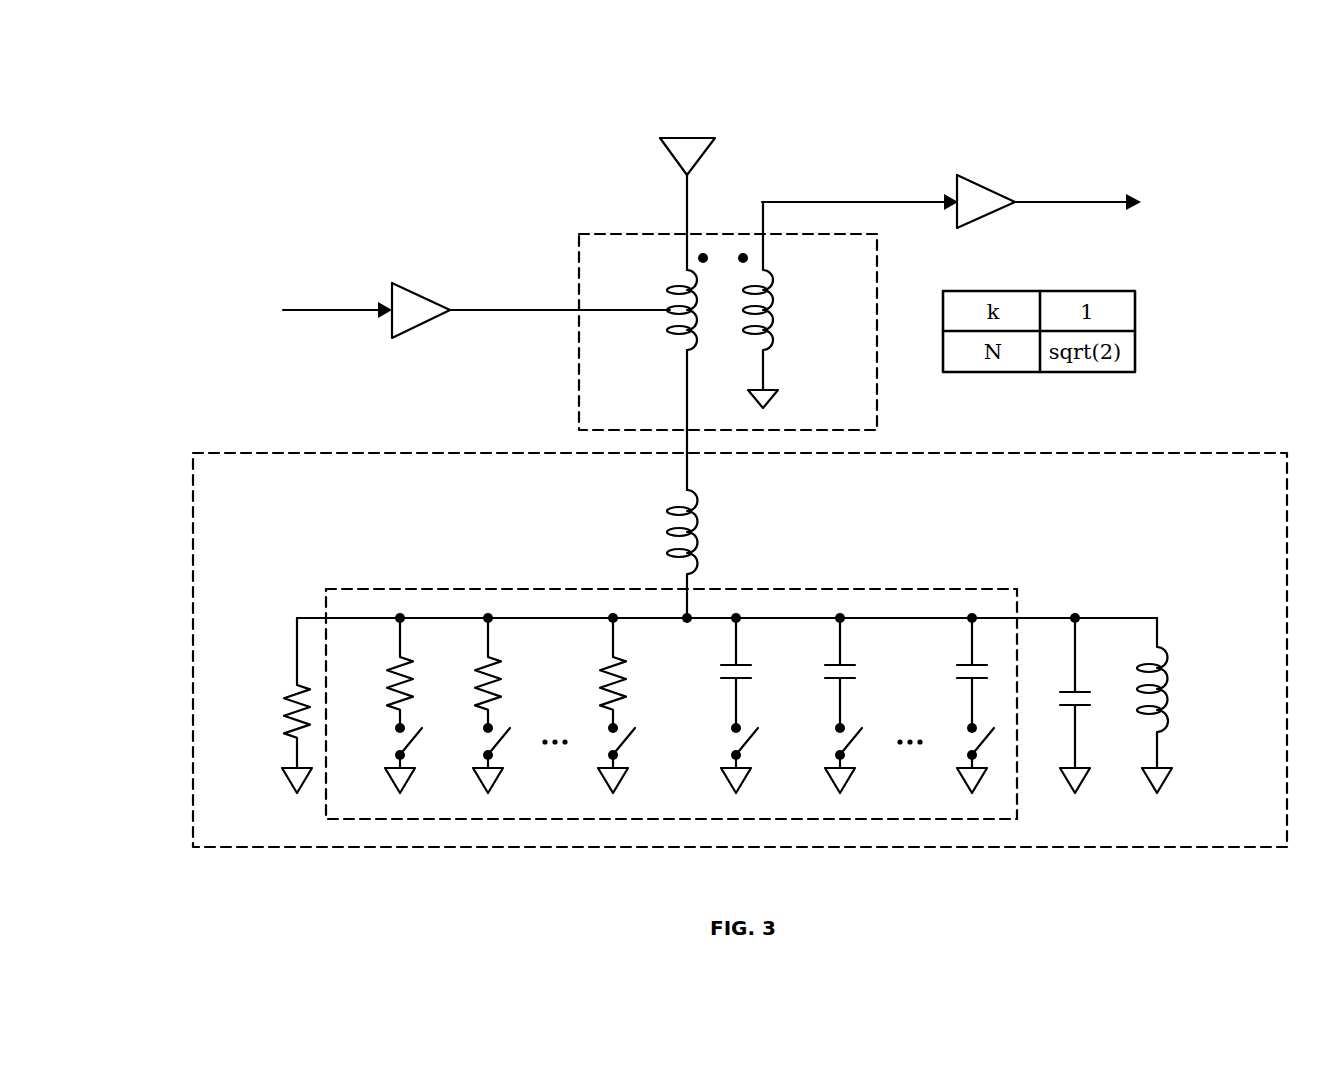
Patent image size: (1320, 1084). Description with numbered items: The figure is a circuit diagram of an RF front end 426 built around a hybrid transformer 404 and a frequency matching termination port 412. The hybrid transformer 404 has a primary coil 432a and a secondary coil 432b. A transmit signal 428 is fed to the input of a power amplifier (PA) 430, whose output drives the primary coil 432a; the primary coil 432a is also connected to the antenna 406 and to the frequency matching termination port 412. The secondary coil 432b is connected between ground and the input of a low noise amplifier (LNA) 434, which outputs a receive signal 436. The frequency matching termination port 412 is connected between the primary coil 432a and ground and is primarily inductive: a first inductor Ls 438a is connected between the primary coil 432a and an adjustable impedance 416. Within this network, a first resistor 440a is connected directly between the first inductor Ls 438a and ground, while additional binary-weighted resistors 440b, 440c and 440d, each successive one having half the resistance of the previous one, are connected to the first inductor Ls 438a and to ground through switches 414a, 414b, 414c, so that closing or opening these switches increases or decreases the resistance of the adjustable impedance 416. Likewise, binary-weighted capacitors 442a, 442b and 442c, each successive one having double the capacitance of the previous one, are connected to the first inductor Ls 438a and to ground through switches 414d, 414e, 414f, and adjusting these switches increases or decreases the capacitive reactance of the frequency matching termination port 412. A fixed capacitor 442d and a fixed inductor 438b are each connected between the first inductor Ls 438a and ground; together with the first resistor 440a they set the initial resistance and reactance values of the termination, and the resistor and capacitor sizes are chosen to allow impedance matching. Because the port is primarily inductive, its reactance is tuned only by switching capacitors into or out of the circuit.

The RF front end 426 is at (196, 132).
The antenna 406 is at (686, 137).
The hybrid transformer 404 is at (608, 234).
The primary coil 432a is at (672, 336).
The secondary coil 432b is at (772, 336).
The transmit signal 428 is at (330, 309).
The power amplifier (PA) 430 is at (420, 323).
The low noise amplifier (LNA) 434 is at (985, 190).
The receive signal 436 is at (1097, 201).
The frequency matching termination port 412 is at (740, 650).
The first inductor Ls 438a is at (700, 505).
The adjustable impedance 416 is at (1017, 592).
The first resistor R0 440a is at (291, 690).
The resistor R 440b is at (394, 705).
The resistor R/2 440c is at (481, 663).
The resistor R/2^(n-1) 440d is at (604, 700).
The capacitor C 442a is at (728, 681).
The capacitor 2C 442b is at (832, 681).
The capacitor 2^(n-1)C 442c is at (963, 681).
The capacitor C0 442d is at (1061, 703).
The inductor L0 438b is at (1176, 665).
The switch 414a is at (412, 744).
The switch 414b is at (500, 744).
The switch 414c is at (625, 744).
The switch 414d is at (748, 744).
The switch 414e is at (852, 744).
The switch 414f is at (984, 745).